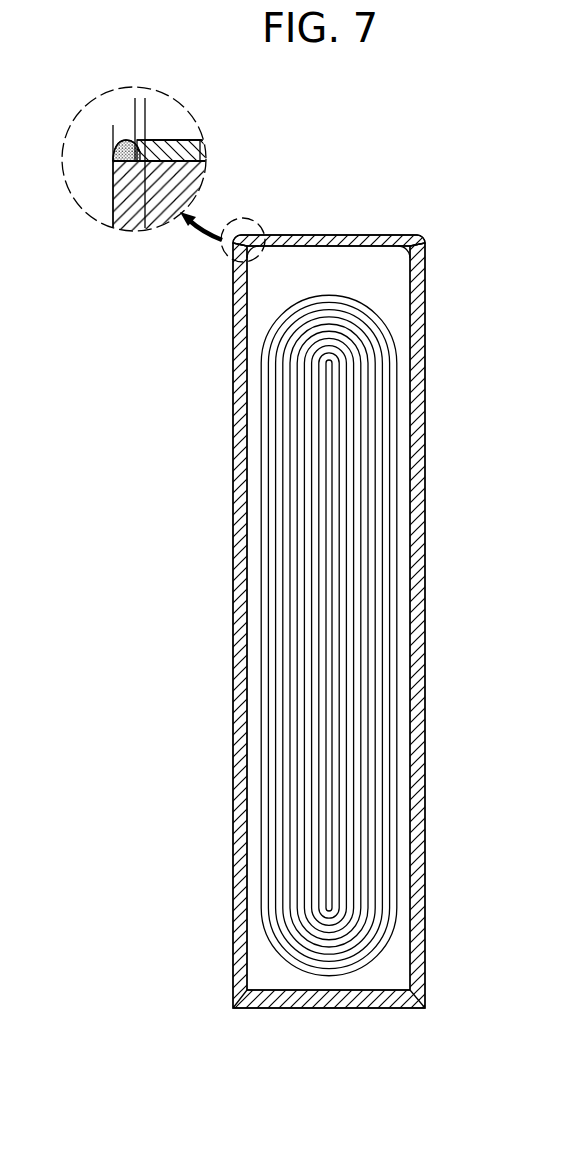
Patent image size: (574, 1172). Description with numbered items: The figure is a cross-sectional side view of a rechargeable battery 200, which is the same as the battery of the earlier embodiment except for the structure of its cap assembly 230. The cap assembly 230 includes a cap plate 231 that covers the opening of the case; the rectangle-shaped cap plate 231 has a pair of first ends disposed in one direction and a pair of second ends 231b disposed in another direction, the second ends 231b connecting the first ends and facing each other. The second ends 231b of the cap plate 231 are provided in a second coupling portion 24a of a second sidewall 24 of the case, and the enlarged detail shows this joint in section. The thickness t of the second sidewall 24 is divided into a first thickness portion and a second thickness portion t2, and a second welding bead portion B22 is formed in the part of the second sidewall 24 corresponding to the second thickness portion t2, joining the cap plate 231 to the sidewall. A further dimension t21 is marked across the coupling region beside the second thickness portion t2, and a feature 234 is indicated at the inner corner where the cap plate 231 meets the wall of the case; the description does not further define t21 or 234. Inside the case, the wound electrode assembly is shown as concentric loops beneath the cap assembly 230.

The rechargeable battery 200 is at (442, 108).
The cap assembly 230 is at (344, 233).
The cap plate 231 is at (392, 236).
The second ends 231b is at (191, 150).
The inner corner fillet 234 is at (406, 251).
The second sidewall 24 is at (120, 185).
The second coupling portion 24a is at (116, 146).
The second welding bead portion B22 is at (113, 156).
The thickness t is at (88, 212).
The second thickness portion t2 is at (88, 127).
The cap plate overlap width t21 is at (112, 106).